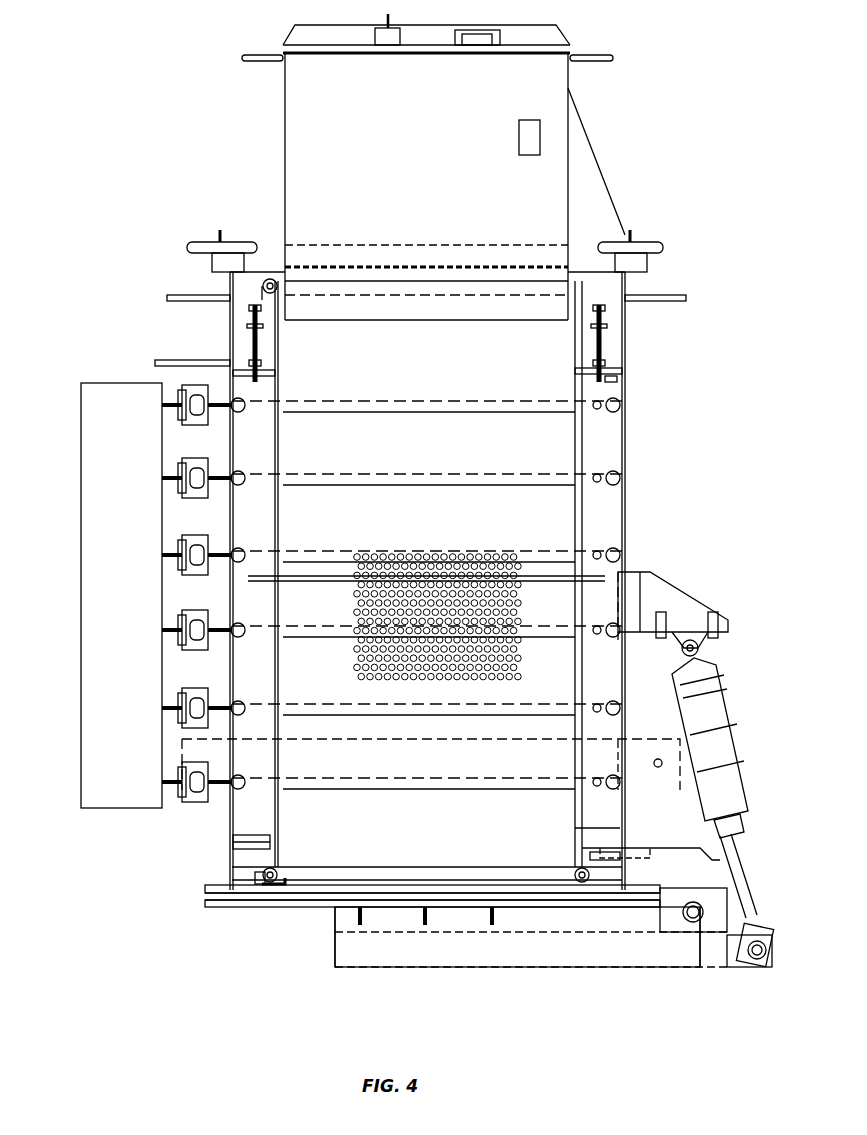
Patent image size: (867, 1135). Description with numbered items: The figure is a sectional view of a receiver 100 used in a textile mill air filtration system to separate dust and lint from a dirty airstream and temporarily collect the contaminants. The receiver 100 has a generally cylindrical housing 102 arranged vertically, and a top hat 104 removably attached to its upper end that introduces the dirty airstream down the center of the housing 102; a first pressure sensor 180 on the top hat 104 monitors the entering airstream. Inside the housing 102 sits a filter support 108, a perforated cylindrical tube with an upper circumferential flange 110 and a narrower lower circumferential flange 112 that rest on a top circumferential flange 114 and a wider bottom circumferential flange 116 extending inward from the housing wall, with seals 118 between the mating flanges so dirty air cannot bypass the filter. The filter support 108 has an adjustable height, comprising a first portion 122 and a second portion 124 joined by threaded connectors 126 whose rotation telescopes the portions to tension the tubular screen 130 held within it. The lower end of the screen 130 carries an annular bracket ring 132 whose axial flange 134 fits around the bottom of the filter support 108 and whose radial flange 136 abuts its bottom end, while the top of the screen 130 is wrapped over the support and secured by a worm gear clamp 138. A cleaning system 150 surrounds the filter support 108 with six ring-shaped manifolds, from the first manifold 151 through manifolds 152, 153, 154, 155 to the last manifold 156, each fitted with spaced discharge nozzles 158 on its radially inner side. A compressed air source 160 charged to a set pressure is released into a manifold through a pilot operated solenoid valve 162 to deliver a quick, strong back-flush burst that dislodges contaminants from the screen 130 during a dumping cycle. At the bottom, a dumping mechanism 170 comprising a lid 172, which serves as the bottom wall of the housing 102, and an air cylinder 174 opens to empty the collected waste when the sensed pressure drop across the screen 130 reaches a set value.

The receiver 100 is at (742, 84).
The housing 102 is at (626, 462).
The top hat 104 is at (315, 140).
The filter support 108 is at (262, 833).
The upper circumferential flange 110 is at (613, 368).
The lower circumferential flange 112 is at (600, 850).
The top circumferential flange 114 is at (617, 380).
The bottom circumferential flange 116 is at (614, 862).
The seals 118 is at (240, 373).
The first portion 122 is at (582, 675).
The second portion 124 is at (586, 340).
The threaded connectors 126 is at (250, 345).
The screen 130 is at (578, 826).
The annular bracket ring 132 is at (266, 888).
The axial flange 134 is at (258, 880).
The radial flange 136 is at (280, 887).
The worm gear clamp 138 is at (268, 300).
The cleaning system 150 is at (73, 402).
The first manifold 151 is at (340, 402).
The manifold 152 is at (333, 474).
The manifold 153 is at (318, 548).
The manifold 154 is at (300, 622).
The manifold 155 is at (315, 710).
The last manifold 156 is at (350, 778).
The discharge nozzles 158 is at (600, 782).
The compressed air source 160 is at (100, 645).
The pilot operated solenoid valve 162 is at (192, 478).
The dumping mechanism 170 is at (736, 990).
The lid 172 is at (312, 910).
The air cylinder 174 is at (718, 786).
The first pressure sensor 180 is at (530, 135).